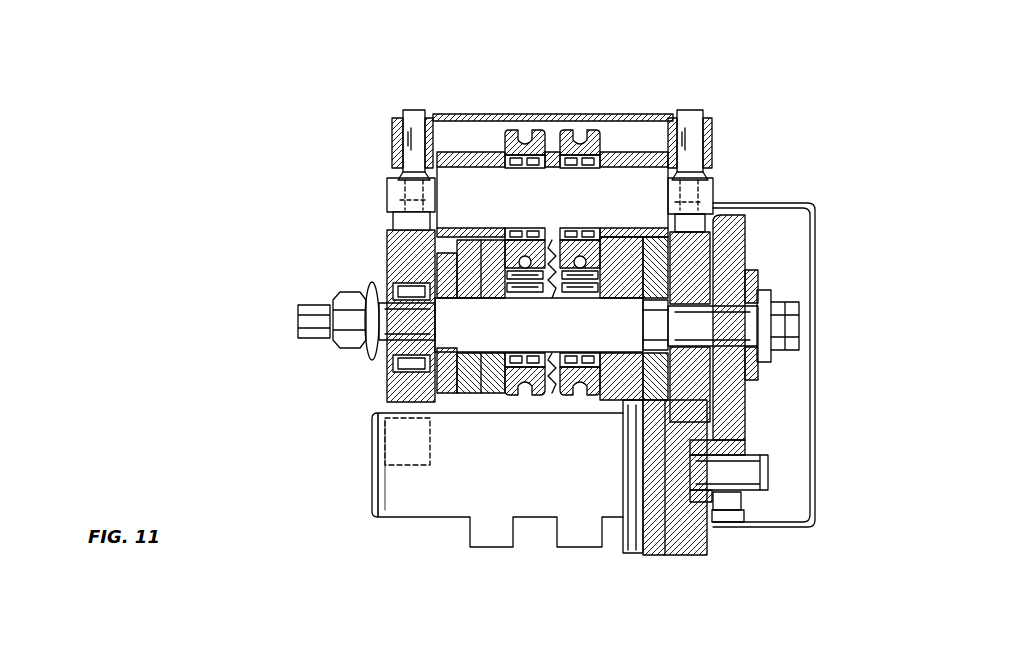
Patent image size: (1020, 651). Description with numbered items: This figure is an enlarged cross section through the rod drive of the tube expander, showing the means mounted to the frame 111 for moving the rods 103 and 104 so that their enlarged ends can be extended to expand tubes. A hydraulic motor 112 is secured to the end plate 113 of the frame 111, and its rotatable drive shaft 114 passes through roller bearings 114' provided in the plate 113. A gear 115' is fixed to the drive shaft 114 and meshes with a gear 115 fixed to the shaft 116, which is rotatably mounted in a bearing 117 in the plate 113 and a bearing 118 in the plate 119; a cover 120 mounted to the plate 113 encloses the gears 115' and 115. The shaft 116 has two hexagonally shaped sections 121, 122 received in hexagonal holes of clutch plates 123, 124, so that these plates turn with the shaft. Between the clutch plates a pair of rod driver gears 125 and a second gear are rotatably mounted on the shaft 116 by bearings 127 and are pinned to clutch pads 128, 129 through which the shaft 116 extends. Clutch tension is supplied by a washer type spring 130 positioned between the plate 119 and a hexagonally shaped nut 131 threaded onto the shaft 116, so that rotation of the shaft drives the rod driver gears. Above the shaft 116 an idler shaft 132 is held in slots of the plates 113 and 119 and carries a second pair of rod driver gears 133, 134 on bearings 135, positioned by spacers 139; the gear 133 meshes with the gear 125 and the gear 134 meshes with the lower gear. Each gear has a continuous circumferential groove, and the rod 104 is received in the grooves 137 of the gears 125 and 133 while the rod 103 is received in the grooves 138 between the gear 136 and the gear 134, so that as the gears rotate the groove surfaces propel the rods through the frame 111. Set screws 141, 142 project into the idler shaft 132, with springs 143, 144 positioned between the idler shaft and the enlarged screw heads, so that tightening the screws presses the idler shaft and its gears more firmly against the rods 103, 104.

The frame 111 is at (780, 82).
The hydraulic motor 112 is at (418, 500).
The end plate 113 is at (708, 553).
The drive shaft 114 is at (778, 471).
The roller bearings 114' is at (792, 532).
The gear 115 is at (789, 327).
The gear 115' is at (791, 520).
The shaft 116 is at (745, 327).
The bearing 117 is at (743, 270).
The bearing 118 is at (392, 232).
The plate 119 is at (387, 390).
The cover 120 is at (783, 205).
The hexagonally shaped section 121 is at (438, 325).
The hexagonally shaped section 122 is at (710, 312).
The clutch plate 123 is at (437, 400).
The clutch plate 124 is at (640, 240).
The rod driver gear 125 is at (480, 398).
The bearings 127 is at (525, 290).
The clutch pad 128 is at (427, 418).
The clutch pad 129 is at (617, 402).
The washer type spring 130 is at (347, 297).
The hexagonally shaped nut 131 is at (335, 300).
The idler shaft 132 is at (682, 203).
The rod driver gear 133 is at (516, 158).
The rod driver gear 134 is at (575, 138).
The bearings 135 is at (483, 150).
The gear 136 is at (553, 152).
The grooves 137 is at (528, 132).
The grooves 138 is at (581, 142).
The spacers 139 is at (447, 152).
The set screw 141 is at (403, 115).
The set screw 142 is at (692, 112).
The spring 143 is at (392, 167).
The spring 144 is at (708, 178).
The rod 103 is at (590, 235).
The rod 104 is at (512, 233).